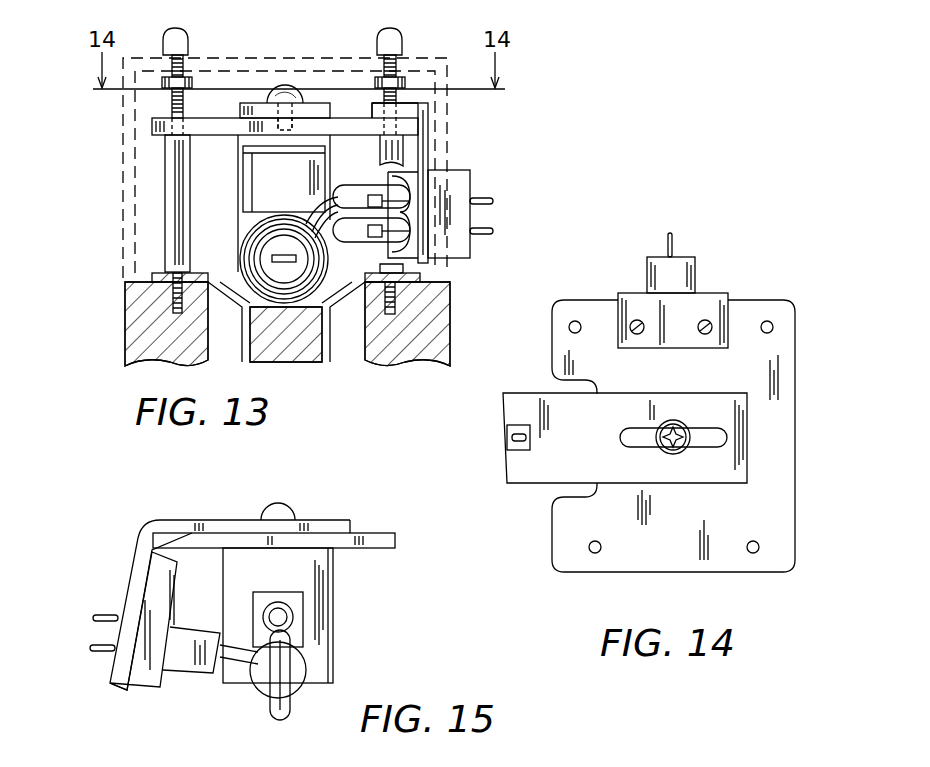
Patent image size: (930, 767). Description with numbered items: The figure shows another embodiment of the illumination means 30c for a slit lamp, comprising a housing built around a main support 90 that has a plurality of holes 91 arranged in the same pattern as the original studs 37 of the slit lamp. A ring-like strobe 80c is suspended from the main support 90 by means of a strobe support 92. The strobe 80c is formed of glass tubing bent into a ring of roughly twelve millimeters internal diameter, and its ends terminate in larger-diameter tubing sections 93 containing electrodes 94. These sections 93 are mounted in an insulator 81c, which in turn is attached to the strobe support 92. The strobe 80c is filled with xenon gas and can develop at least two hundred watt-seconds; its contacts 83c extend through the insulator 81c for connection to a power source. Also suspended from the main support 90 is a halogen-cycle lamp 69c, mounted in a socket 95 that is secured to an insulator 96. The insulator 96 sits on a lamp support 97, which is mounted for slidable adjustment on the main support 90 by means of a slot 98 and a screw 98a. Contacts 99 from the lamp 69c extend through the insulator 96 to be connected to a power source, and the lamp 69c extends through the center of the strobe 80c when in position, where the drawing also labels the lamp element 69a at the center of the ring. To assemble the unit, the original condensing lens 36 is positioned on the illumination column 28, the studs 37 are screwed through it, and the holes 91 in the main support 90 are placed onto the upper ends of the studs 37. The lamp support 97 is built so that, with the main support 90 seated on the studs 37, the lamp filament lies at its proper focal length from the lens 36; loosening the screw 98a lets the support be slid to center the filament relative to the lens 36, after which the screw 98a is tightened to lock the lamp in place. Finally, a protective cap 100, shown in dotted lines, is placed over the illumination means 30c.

In FIG. 13, the illumination column 28 is at (450, 323).
In FIG. 13, the illumination means 30c is at (120, 152).
In FIG. 14, the illumination means 30c is at (737, 281).
In FIG. 13, the condensing lens 36 is at (330, 350).
In FIG. 13, the studs 37 is at (165, 183).
In FIG. 13, the cam hub 69a is at (287, 250).
In FIG. 15, the cam hub 69a is at (259, 690).
In FIG. 13, the lamp 69c is at (266, 268).
In FIG. 13, the strobe 80c is at (252, 233).
In FIG. 15, the strobe 80c is at (276, 717).
In FIG. 13, the insulator 81c is at (448, 170).
In FIG. 14, the insulator 81c is at (647, 265).
In FIG. 15, the insulator 81c is at (262, 598).
In FIG. 13, the contacts 83c is at (492, 198).
In FIG. 14, the contacts 83c is at (668, 248).
In FIG. 13, the main support 90 is at (230, 135).
In FIG. 14, the main support 90 is at (783, 556).
In FIG. 15, the main support 90 is at (368, 532).
In FIG. 14, the holes 91 is at (578, 322).
In FIG. 13, the strobe support 92 is at (372, 108).
In FIG. 14, the strobe support 92 is at (712, 293).
In FIG. 15, the strobe support 92 is at (335, 576).
In FIG. 13, the tubing sections 93 is at (364, 208).
In FIG. 15, the tubing sections 93 is at (284, 606).
In FIG. 13, the electrodes 94 is at (376, 194).
In FIG. 15, the socket 95 is at (181, 673).
In FIG. 13, the insulator 96 is at (297, 182).
In FIG. 14, the insulator 96 is at (510, 449).
In FIG. 15, the insulator 96 is at (170, 606).
In FIG. 13, the lamp support 97 is at (240, 108).
In FIG. 14, the lamp support 97 is at (650, 393).
In FIG. 15, the lamp support 97 is at (225, 518).
In FIG. 14, the slot 98 is at (705, 430).
In FIG. 14, the screw 98a is at (664, 447).
In FIG. 15, the screw 98a is at (292, 511).
In FIG. 14, the contacts 99 is at (513, 436).
In FIG. 15, the contacts 99 is at (103, 615).
In FIG. 13, the protective cap 100 is at (332, 57).